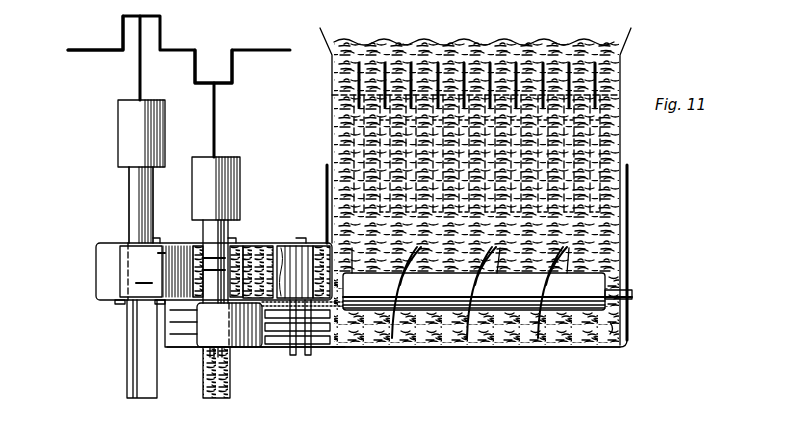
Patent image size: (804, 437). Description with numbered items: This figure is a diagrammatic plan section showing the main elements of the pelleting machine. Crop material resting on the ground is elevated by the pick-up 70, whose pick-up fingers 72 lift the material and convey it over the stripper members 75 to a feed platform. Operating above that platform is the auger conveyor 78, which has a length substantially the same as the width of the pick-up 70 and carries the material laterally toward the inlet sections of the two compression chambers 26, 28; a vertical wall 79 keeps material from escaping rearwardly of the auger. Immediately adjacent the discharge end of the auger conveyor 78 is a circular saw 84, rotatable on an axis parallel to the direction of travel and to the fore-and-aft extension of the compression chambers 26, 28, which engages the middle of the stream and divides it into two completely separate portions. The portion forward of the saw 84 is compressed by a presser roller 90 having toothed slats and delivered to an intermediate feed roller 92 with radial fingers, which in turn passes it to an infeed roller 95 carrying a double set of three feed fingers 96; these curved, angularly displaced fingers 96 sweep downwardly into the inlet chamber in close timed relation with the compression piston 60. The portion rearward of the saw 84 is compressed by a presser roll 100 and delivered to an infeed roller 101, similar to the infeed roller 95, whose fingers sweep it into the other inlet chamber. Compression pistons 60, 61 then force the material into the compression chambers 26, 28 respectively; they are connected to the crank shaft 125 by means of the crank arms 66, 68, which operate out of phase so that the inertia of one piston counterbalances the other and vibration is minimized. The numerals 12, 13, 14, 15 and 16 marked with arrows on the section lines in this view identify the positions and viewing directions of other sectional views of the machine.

The section line 12- 12 is at (284, 18).
The section line 13- 13 is at (199, 32).
The section line 14- 14 is at (115, 16).
The section line 15- 15 is at (161, 331).
The section line 16- 16 is at (96, 296).
The compression chamber 26 is at (128, 364).
The compression chamber 28 is at (231, 385).
The compression piston 60 is at (129, 197).
The compression piston 61 is at (233, 241).
The crank arm 66 is at (122, 56).
The crank arm 68 is at (235, 72).
The pick-up 70 is at (560, 50).
The pick-up fingers 72 is at (490, 63).
The stripper members 75 is at (618, 160).
The auger conveyor 78 is at (525, 296).
The vertical wall 79 is at (490, 348).
The circular saw 84 is at (343, 297).
The presser roller 90 is at (311, 243).
The intermediate feed roller 92 is at (229, 325).
The infeed roller 95 is at (126, 270).
The feed fingers 96 is at (158, 271).
The presser roll 100 is at (325, 337).
The infeed roller 101 is at (247, 337).
The crank shaft 125 is at (176, 52).